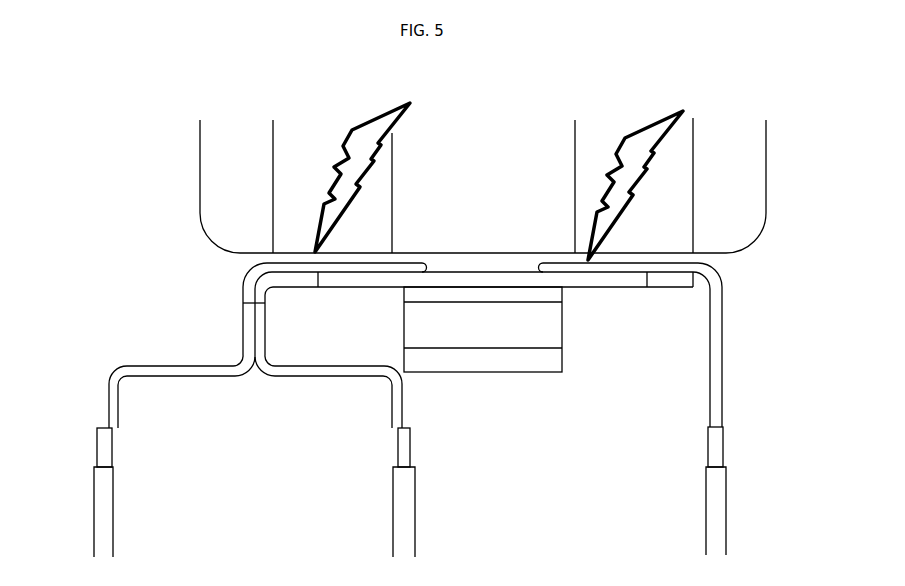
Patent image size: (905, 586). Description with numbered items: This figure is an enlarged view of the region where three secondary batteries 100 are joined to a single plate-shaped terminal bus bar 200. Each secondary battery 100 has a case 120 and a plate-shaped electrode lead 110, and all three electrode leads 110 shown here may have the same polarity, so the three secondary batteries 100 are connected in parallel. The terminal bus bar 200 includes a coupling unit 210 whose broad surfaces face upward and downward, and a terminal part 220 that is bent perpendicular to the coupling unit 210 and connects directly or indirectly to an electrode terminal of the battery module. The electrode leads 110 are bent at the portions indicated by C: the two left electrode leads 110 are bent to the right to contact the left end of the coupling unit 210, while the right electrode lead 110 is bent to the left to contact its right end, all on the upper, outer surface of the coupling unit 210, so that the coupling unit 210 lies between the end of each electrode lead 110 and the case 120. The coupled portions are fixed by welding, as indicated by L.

The secondary battery 100 is at (77, 424).
The electrode lead 110 is at (363, 272).
The case 120 is at (115, 500).
The terminal bus bar 200 is at (585, 408).
The coupling unit 210 is at (614, 288).
The terminal part 220 is at (662, 240).
The welding process L is at (501, 171).
The bent portions C is at (243, 265).